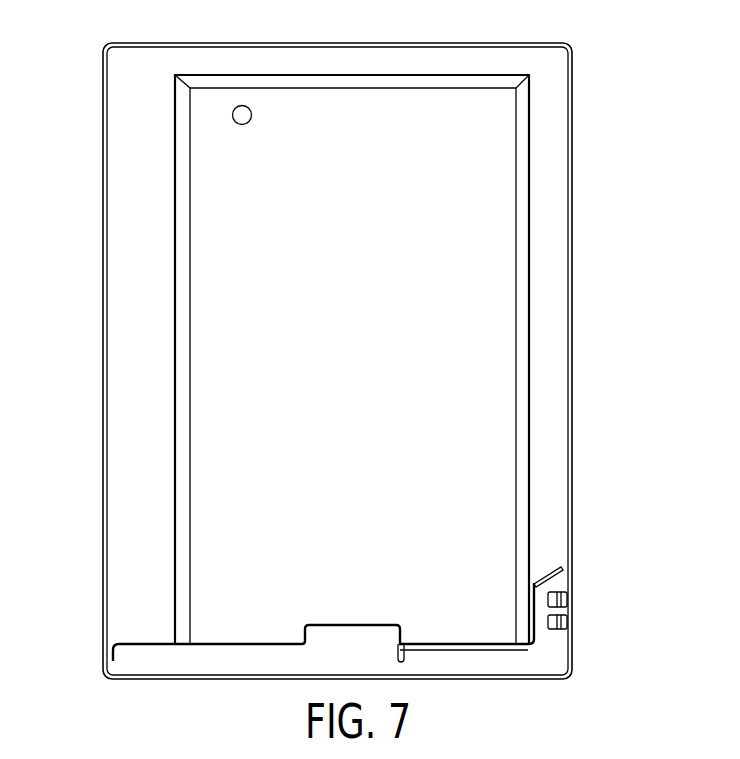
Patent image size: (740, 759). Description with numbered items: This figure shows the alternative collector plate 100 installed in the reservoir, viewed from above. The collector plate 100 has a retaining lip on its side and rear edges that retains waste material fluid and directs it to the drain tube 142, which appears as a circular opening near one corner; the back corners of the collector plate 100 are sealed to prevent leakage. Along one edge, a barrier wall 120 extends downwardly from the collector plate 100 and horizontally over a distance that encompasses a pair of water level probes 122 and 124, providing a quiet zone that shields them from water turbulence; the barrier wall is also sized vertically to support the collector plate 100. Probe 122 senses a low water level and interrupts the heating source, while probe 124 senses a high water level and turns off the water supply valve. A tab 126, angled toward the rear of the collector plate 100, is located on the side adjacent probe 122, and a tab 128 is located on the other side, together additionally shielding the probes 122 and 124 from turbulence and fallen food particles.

The collector plate 100 is at (348, 327).
The barrier wall 120 is at (536, 645).
The water level probe 122 is at (567, 599).
The water level probe 124 is at (567, 621).
The tab 126 is at (547, 576).
The tab 128 is at (403, 661).
The drain tube 142 is at (242, 115).